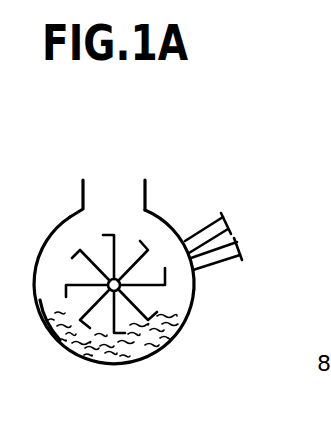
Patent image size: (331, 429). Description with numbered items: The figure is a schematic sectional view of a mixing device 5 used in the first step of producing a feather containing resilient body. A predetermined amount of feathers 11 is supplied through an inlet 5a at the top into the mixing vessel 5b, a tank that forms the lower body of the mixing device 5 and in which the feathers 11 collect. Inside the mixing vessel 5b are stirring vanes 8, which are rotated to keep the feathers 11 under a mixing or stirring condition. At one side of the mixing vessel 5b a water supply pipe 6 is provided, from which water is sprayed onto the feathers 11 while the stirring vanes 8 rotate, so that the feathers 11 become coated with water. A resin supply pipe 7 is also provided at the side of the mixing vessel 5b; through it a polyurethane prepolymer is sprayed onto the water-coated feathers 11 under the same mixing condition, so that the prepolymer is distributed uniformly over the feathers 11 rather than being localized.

The mixing device 5 is at (165, 347).
The inlet 5a is at (115, 195).
The mixing vessel 5b is at (42, 313).
The water supply pipe 6 is at (207, 225).
The resin supply pipe 7 is at (228, 262).
The stirring vanes 8 is at (72, 251).
The feathers 11 is at (92, 355).